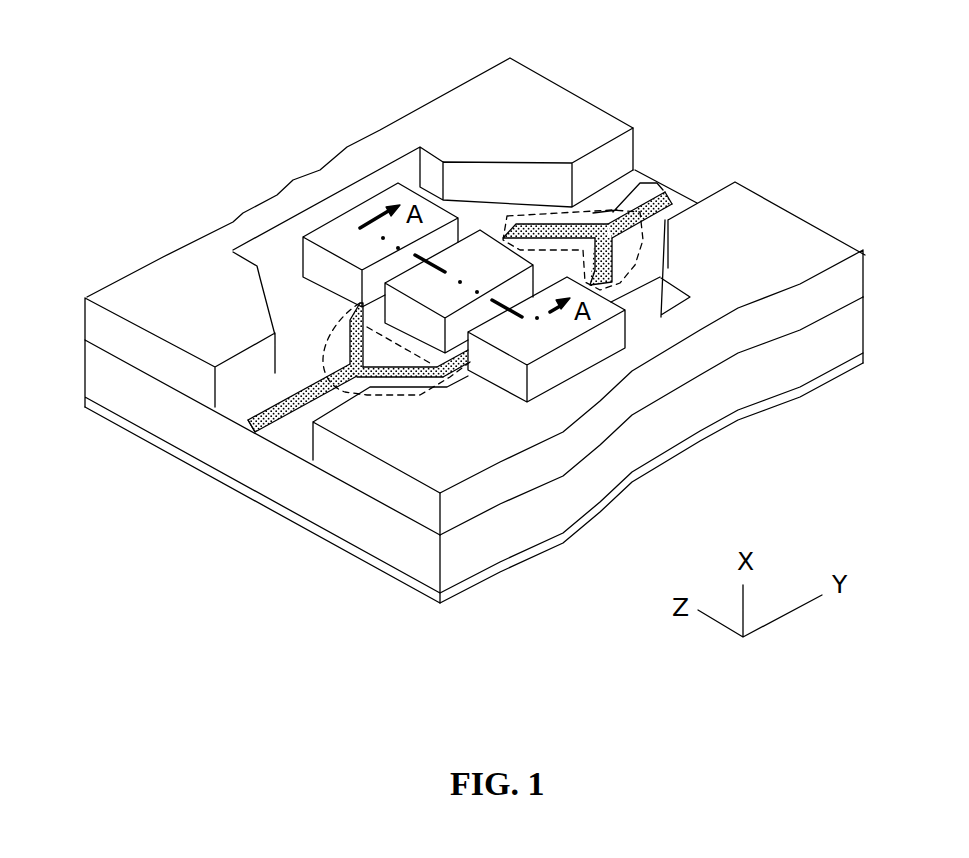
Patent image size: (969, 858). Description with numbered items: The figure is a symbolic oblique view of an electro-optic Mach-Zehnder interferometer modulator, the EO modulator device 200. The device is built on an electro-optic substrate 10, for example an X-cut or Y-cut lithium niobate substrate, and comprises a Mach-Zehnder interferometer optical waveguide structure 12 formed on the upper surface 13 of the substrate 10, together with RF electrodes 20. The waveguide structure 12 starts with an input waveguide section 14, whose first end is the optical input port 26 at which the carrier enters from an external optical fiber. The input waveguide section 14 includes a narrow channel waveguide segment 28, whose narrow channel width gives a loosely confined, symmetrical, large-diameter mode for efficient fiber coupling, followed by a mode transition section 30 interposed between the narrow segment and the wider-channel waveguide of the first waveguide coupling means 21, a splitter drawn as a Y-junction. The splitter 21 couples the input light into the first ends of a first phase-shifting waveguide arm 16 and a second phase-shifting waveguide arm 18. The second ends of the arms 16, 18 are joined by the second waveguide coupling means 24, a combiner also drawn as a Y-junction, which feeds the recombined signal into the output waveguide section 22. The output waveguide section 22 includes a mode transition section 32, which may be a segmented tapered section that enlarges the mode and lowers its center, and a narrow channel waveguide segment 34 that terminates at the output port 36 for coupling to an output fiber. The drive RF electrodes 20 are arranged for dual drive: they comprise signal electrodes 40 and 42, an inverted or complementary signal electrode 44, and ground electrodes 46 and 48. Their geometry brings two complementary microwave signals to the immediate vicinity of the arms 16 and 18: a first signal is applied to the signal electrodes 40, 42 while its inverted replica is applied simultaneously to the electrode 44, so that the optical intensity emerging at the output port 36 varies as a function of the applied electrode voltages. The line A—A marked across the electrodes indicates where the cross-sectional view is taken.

The EO modulator device 200 is at (722, 84).
The substrate 10 is at (530, 524).
The ground electrode 48 is at (763, 410).
The ground electrode 46 is at (343, 165).
The input waveguide section 14 is at (247, 410).
The upper surface 13 is at (287, 279).
The RF electrodes 20 is at (578, 390).
The Mach Zehnder Interferometer optical waveguide structure 12 is at (427, 386).
The first phase-shifting waveguide arm 16 is at (360, 303).
The second phase-shifting waveguide arm 18 is at (452, 375).
The first waveguide coupling means 21 is at (330, 343).
The output waveguide section 22 is at (613, 210).
The second waveguide coupling means 24 is at (560, 217).
The optical input port 26 is at (247, 437).
The narrow channel waveguide segment 28 is at (280, 420).
The mode transition section 30 is at (333, 400).
The mode transition section 32 is at (657, 215).
The narrow channel waveguide segment 34 is at (680, 197).
The output port 36 is at (657, 203).
The signal electrode 40 is at (347, 240).
The signal electrode 42 is at (517, 335).
The inverted signal electrode 44 is at (480, 253).